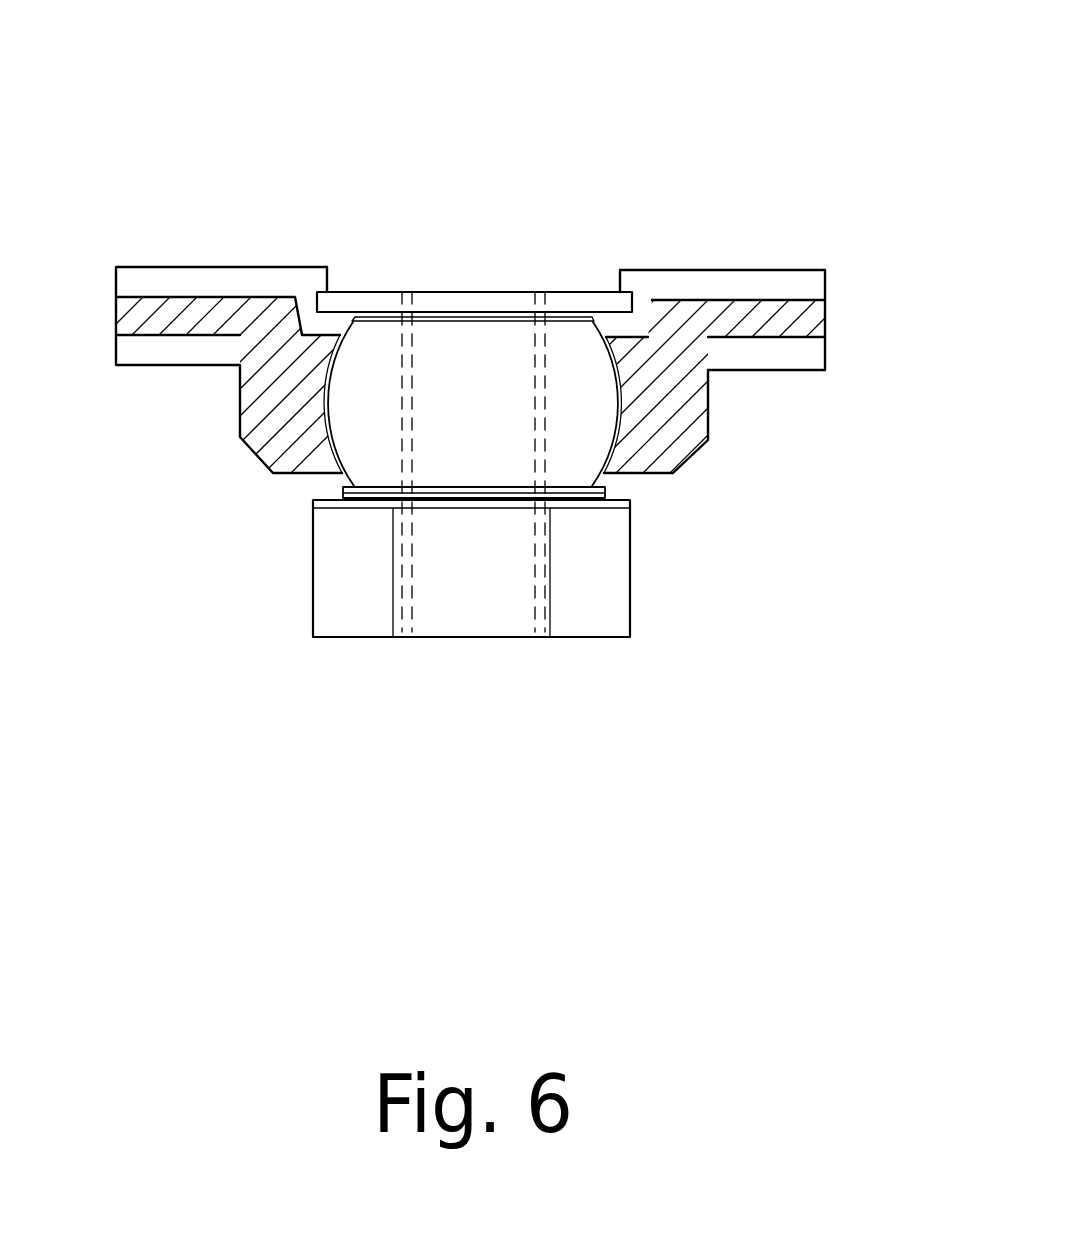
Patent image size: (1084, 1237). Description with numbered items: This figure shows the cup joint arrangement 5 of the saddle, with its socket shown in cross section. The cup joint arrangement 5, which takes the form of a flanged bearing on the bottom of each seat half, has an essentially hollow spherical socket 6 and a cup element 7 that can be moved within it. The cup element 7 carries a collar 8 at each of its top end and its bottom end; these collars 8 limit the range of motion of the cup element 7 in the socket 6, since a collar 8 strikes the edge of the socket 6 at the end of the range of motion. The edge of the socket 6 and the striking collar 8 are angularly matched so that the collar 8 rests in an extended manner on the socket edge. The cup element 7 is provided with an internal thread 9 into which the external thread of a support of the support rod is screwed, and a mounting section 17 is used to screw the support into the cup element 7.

The cup joint arrangement 5 is at (514, 417).
The socket 6 is at (273, 360).
The cup element 7 is at (570, 453).
The collar 8 is at (375, 298).
The internal thread 9 is at (535, 385).
The mounting section 17 is at (367, 612).